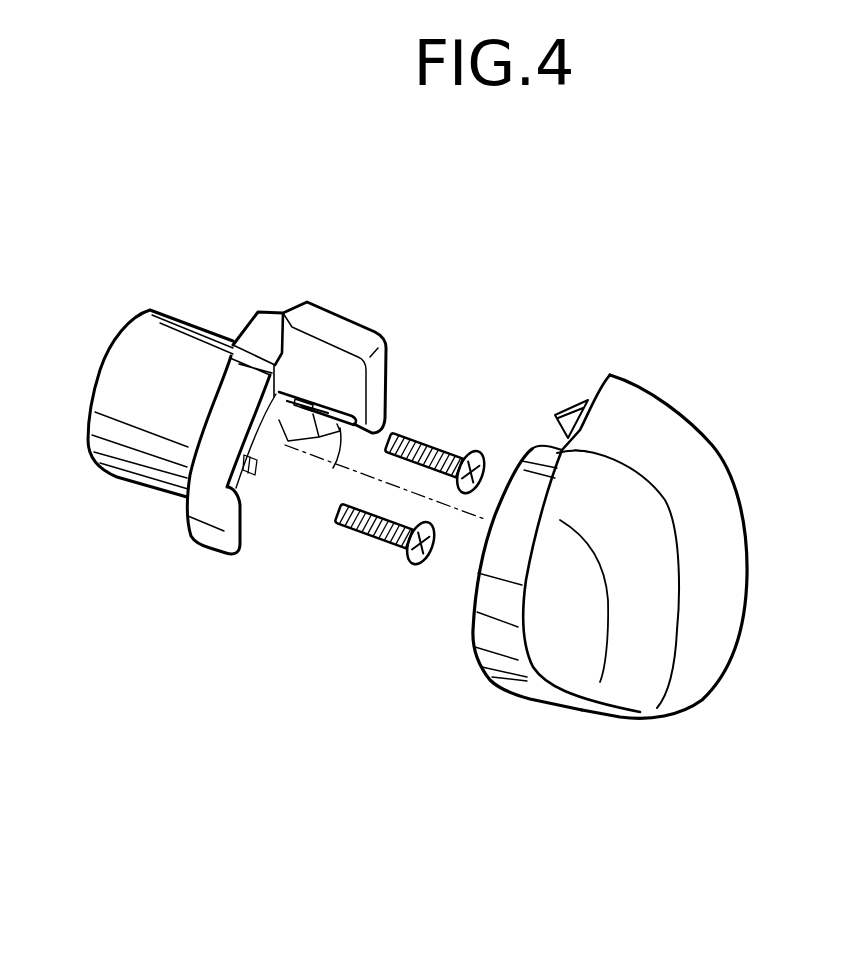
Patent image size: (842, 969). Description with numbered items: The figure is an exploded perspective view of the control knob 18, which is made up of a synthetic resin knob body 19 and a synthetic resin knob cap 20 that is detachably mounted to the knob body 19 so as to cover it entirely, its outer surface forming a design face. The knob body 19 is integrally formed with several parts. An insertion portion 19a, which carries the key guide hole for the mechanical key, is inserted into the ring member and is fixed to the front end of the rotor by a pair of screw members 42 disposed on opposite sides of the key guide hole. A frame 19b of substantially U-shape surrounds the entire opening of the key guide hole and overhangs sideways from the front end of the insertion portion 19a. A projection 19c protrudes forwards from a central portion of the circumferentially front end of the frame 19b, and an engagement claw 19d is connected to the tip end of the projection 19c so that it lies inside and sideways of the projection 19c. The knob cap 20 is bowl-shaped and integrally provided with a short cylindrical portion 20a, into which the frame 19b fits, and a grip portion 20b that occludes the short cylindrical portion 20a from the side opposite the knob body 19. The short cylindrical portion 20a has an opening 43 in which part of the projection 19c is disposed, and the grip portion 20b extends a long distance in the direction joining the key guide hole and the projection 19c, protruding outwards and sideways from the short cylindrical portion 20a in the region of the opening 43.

The control knob 18 is at (673, 250).
The knob body 19 is at (381, 328).
The knob cap 20 is at (674, 397).
The insertion portion 19a is at (178, 326).
The frame 19b is at (207, 513).
The projection 19c is at (335, 317).
The engagement claw 19d is at (326, 447).
The short cylindrical portion 20a is at (498, 657).
The grip portion 20b is at (715, 509).
The screw members 42 is at (437, 442).
The opening 43 is at (587, 455).